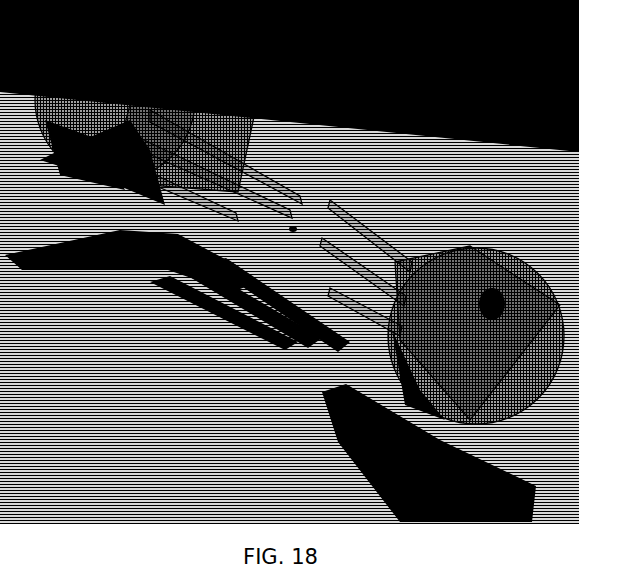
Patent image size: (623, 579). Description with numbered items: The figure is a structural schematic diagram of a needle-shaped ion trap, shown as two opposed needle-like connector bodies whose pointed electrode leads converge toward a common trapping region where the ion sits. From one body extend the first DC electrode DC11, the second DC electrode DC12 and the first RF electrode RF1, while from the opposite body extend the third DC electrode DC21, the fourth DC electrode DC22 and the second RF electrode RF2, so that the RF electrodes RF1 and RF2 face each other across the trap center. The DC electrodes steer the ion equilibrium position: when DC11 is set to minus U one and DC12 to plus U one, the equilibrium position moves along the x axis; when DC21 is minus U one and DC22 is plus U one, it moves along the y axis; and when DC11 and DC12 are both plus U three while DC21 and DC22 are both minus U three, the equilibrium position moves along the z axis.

The first DC electrode DC11 is at (226, 157).
The second DC electrode DC12 is at (183, 196).
The first RF electrode RF1 is at (216, 181).
The third DC electrode DC21 is at (370, 228).
The second RF electrode RF2 is at (352, 272).
The fourth DC electrode DC22 is at (341, 312).